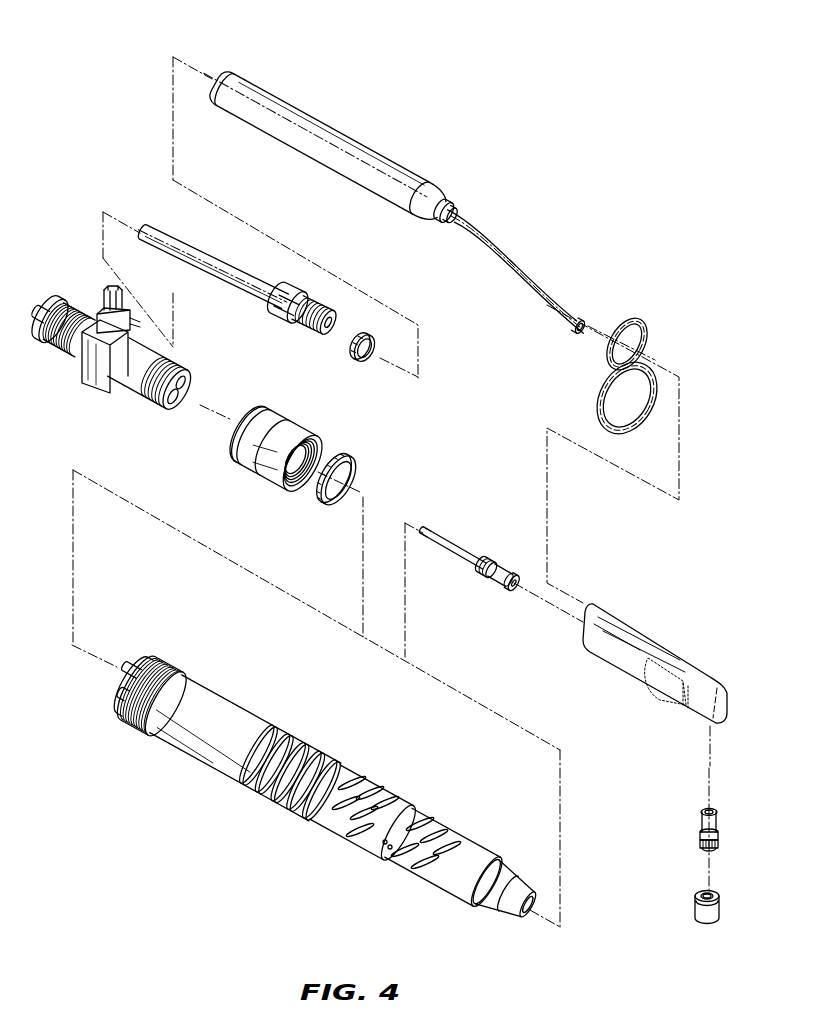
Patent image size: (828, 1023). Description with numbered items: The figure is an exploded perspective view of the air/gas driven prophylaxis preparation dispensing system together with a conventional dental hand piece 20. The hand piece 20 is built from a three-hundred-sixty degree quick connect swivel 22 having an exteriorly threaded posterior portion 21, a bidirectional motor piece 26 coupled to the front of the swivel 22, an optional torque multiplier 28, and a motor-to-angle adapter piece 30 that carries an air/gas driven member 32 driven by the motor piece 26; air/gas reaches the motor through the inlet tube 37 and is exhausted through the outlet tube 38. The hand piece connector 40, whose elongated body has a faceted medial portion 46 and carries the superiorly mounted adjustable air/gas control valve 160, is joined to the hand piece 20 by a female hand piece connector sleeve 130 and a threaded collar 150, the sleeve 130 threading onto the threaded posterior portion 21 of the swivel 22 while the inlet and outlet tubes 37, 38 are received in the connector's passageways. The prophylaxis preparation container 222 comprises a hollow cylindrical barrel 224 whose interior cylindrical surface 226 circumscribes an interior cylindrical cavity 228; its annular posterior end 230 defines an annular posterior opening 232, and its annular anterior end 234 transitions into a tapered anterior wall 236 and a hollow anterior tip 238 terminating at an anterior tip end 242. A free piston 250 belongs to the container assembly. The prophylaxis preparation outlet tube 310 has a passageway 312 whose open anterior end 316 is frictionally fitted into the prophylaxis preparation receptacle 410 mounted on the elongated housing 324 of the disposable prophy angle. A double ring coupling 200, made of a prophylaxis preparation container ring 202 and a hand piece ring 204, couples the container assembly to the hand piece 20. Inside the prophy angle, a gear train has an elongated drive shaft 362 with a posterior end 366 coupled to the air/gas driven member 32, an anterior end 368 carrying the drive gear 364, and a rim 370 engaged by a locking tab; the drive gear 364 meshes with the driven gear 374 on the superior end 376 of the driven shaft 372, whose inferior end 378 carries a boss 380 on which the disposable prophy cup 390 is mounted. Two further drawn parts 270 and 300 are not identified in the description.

The dental hand piece 20 is at (230, 672).
The exteriorly threaded posterior portion 21 is at (127, 715).
The three-hundred-sixty degree quick connect swivel 22 is at (172, 660).
The bidirectional motor piece 26 is at (262, 717).
The optional torque multiplier 28 is at (343, 762).
The motor-to-angle adapter piece 30 is at (415, 808).
The air/gas driven member 32 is at (507, 873).
The inlet tube 37 is at (121, 658).
The outlet tube 38 is at (117, 692).
The hand piece connector 40 is at (36, 298).
The faceted medial portion 46 is at (93, 367).
The female hand piece connector sleeve 130 is at (223, 463).
The threaded collar 150 is at (363, 455).
The adjustable air/gas control valve 160 is at (100, 283).
The double ring coupling 200 is at (673, 342).
The prophylaxis preparation container ring 202 is at (638, 323).
The hand piece ring 204 is at (602, 400).
The prophylaxis preparation container 222 is at (313, 103).
The hollow cylindrical barrel 224 is at (270, 88).
The interior cylindrical surface 226 is at (331, 127).
The interior cylindrical cavity 228 is at (371, 165).
The annular posterior end 230 is at (221, 72).
The annular posterior opening 232 is at (215, 73).
The annular anterior end 234 is at (428, 228).
The tapered anterior wall 236 is at (432, 200).
The hollow anterior tip 238 is at (450, 200).
The anterior tip end 242 is at (453, 210).
The free piston 250 is at (347, 362).
The fitting 270 is at (292, 337).
The supply tube 300 is at (147, 232).
The prophylaxis preparation outlet tube 310 is at (500, 243).
The passageway 312 is at (540, 282).
The open anterior end 316 is at (585, 313).
The elongated housing 324 is at (663, 697).
The elongated drive shaft 362 is at (458, 548).
The drive gear 364 is at (503, 595).
The posterior end 366 is at (427, 528).
The anterior end 368 is at (515, 573).
The rim 370 is at (483, 578).
The driven shaft 372 is at (700, 832).
The driven gear 374 is at (702, 813).
The superior end 376 is at (700, 818).
The inferior end 378 is at (700, 838).
The boss 380 is at (700, 845).
The disposable prophy cup 390 is at (688, 925).
The prophylaxis preparation receptacle 410 is at (647, 628).